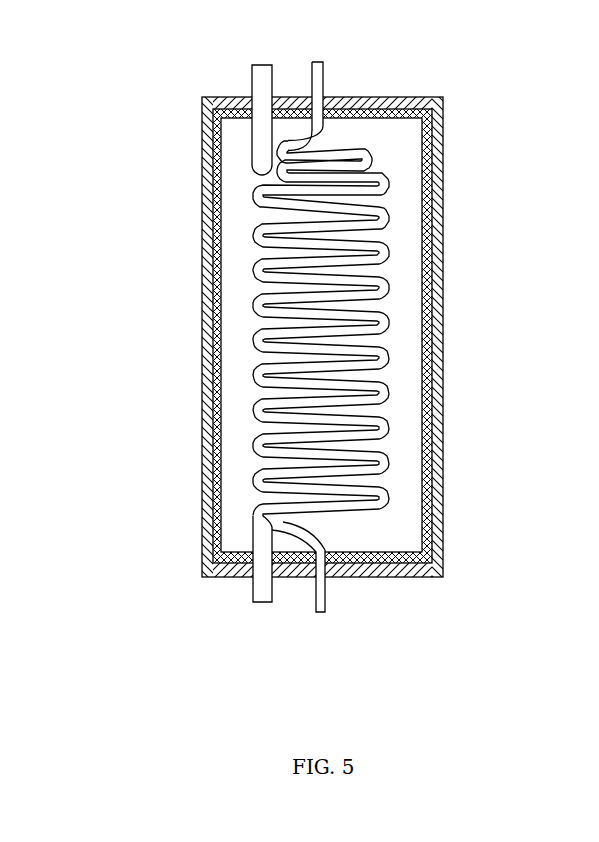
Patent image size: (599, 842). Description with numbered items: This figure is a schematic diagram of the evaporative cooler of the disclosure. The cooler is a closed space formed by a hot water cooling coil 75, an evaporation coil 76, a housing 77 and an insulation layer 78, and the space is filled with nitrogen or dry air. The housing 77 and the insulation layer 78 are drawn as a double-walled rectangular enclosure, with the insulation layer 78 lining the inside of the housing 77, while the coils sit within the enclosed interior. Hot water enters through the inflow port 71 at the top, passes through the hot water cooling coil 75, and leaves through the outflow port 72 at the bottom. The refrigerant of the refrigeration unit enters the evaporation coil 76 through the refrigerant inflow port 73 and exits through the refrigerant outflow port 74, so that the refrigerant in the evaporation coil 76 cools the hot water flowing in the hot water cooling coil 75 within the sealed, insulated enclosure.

The inflow port 71 is at (327, 59).
The outflow port 72 is at (327, 614).
The refrigerant inflow port 73 is at (253, 603).
The refrigerant outflow port 74 is at (250, 65).
The hot water cooling coil 75 is at (398, 318).
The evaporation coil 76 is at (390, 224).
The housing 77 is at (213, 270).
The insulation layer 78 is at (200, 143).